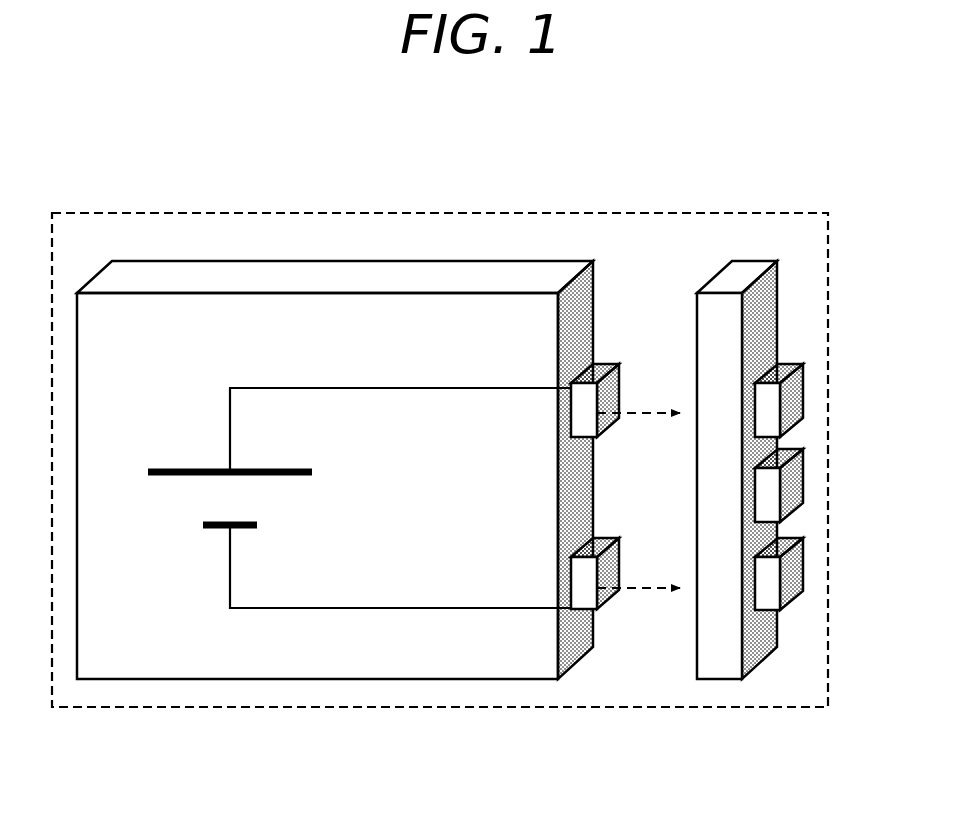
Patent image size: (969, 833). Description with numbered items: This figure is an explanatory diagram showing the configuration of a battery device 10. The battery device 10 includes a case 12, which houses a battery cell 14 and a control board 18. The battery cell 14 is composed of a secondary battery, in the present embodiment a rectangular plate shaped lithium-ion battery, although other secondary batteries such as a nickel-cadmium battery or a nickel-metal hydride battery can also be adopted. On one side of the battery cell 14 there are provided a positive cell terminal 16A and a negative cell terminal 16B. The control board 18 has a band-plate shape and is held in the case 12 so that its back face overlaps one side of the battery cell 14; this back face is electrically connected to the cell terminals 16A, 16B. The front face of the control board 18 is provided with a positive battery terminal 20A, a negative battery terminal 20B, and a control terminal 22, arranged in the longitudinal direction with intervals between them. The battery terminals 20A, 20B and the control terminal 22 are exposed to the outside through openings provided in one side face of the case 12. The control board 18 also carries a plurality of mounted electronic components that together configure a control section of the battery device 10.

The battery device 10 is at (703, 211).
The case 12 is at (320, 213).
The battery cell 14 is at (289, 679).
The positive cell terminal 16A is at (603, 368).
The negative cell terminal 16B is at (603, 543).
The control board 18 is at (757, 650).
The positive battery terminal 20A is at (796, 395).
The negative battery terminal 20B is at (796, 580).
The control terminal 22 is at (796, 485).